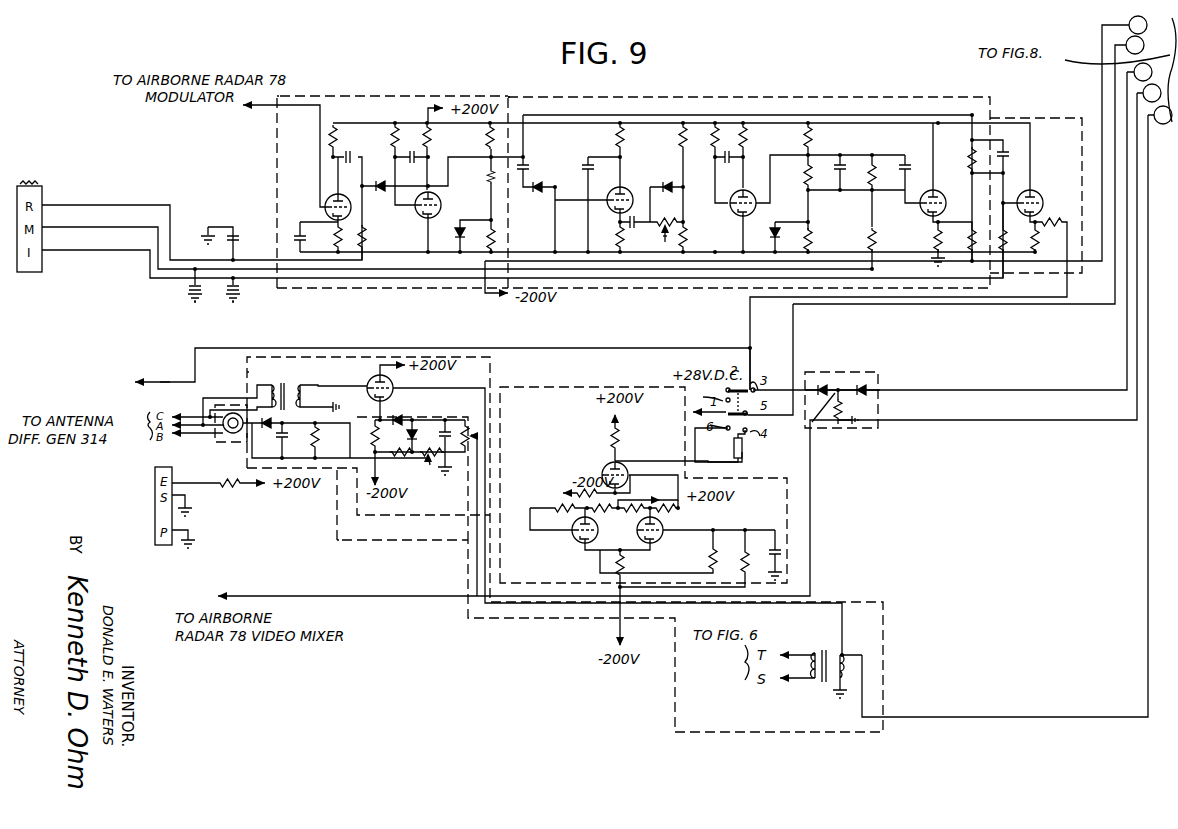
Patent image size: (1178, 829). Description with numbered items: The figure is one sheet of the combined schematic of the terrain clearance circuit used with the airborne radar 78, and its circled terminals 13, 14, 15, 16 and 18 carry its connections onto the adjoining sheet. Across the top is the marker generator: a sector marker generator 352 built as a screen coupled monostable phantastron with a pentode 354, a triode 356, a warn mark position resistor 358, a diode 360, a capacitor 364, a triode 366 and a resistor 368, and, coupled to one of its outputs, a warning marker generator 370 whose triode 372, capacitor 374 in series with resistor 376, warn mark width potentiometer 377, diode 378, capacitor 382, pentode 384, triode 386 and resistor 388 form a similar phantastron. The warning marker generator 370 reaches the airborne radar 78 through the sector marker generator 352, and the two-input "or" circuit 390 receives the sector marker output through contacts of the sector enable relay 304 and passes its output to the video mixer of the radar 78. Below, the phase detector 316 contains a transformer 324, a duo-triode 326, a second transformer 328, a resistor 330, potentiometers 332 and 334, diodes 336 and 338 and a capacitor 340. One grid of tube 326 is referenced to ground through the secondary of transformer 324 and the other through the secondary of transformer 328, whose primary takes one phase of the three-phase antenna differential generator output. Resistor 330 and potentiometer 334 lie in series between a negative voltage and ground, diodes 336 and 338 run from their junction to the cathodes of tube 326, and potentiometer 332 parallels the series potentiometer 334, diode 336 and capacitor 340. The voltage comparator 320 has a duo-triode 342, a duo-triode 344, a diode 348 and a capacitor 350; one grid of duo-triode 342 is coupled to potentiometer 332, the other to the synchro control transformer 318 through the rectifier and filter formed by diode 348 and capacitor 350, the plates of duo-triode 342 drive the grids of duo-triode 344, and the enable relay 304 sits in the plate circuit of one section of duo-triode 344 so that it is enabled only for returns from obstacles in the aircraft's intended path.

The terminal 13 is at (952, 226).
The terminal 14 is at (1138, 25).
The terminal 15 is at (1135, 45).
The terminal 16 is at (689, 342).
The terminal 18 is at (1017, 411).
The airborne radar 78 is at (165, 381).
The sector enable relay 304 is at (745, 446).
The phase detector 316 is at (247, 372).
The synchro control transformer 318 is at (232, 445).
The voltage comparator 320 is at (337, 540).
The transformer 324 is at (822, 650).
The duo-triode 326 is at (368, 384).
The second transformer 328 is at (292, 380).
The resistor 330 is at (388, 454).
The potentiometer 332 is at (482, 431).
The potentiometer 334 is at (432, 460).
The diode 336 is at (410, 436).
The diode 338 is at (397, 419).
The capacitor 340 is at (449, 424).
The duo-triode 342 is at (575, 549).
The duo-triode 344 is at (602, 468).
The diode 348 is at (266, 429).
The capacitor 350 is at (284, 434).
The sector marker generator 352 is at (346, 98).
The pentode 354 is at (443, 210).
The triode 356 is at (325, 207).
The warn mark position resistor 358 is at (362, 236).
The diode 360 is at (377, 180).
The capacitor 364 is at (410, 158).
The triode 366 is at (1052, 190).
The resistor 368 is at (1060, 216).
The warning marker generator 370 is at (838, 98).
The triode 372 is at (630, 180).
The capacitor 374 is at (630, 224).
The resistor 376 is at (666, 238).
The warn mark width potentiometer 377 is at (685, 226).
The diode 378 is at (671, 186).
The capacitor 382 is at (729, 158).
The pentode 384 is at (762, 212).
The triode 386 is at (940, 200).
The resistor 388 is at (935, 240).
The two-input "or" circuit 390 is at (840, 376).